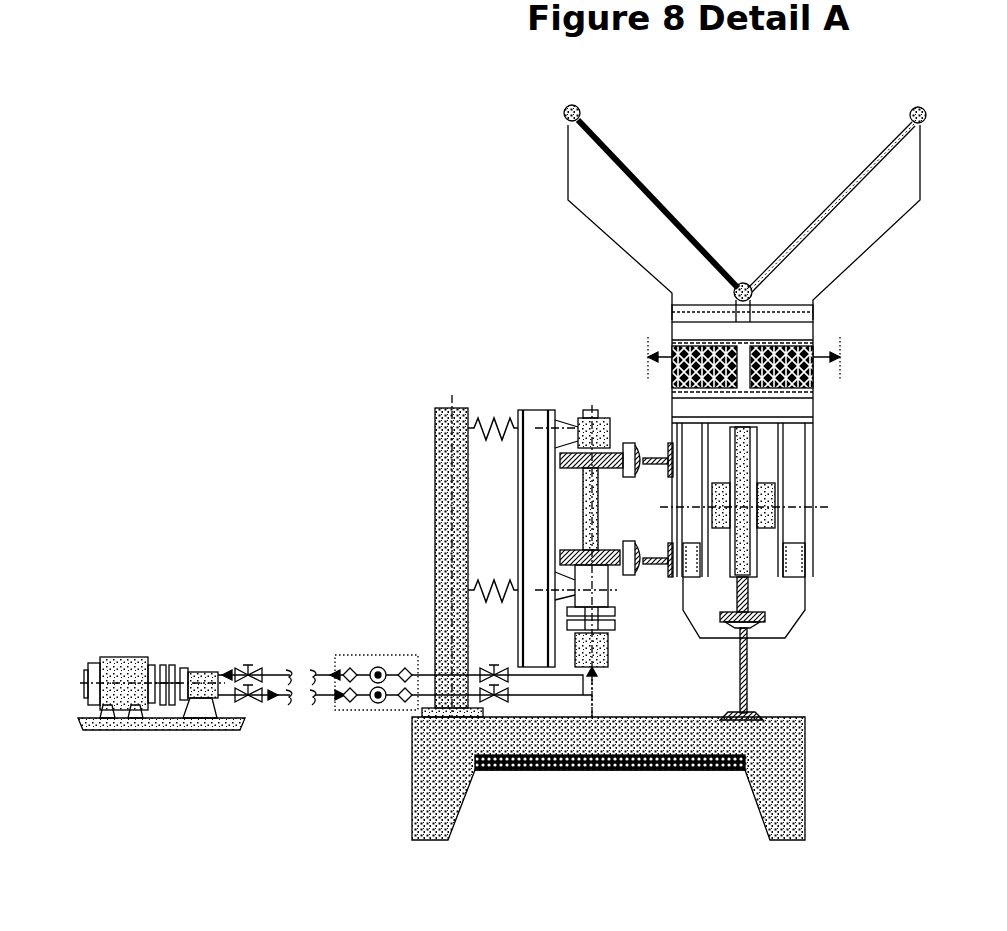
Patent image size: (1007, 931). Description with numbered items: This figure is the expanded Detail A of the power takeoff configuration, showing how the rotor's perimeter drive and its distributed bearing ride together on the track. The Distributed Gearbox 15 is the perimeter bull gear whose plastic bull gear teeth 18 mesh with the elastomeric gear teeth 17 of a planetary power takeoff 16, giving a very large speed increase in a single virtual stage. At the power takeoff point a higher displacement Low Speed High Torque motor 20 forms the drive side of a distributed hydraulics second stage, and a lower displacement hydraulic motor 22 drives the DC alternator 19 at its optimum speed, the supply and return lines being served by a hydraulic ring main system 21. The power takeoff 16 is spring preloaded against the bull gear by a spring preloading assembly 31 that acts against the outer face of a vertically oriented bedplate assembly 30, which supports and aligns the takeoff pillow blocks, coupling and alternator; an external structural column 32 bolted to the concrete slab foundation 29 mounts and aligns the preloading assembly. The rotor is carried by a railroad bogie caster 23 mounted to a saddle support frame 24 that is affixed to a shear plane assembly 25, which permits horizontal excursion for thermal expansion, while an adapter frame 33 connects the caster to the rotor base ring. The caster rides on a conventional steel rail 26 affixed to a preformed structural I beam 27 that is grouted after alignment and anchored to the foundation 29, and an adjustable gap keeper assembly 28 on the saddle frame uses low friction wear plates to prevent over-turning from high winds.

The Distributed Gearbox 15 is at (653, 455).
The power takeoff 16 is at (592, 557).
The elastomeric gear teeth 17 is at (593, 462).
The bull gear teeth 18 is at (628, 440).
The DC alternator 19 is at (120, 684).
The Low Speed High Torque motor 20 is at (606, 652).
The hydraulic ring main system 21 is at (378, 653).
The hydraulic motor 22 is at (200, 686).
The bogie caster 23 is at (740, 542).
The saddle support frame 24 is at (795, 443).
The shear plane assembly 25 is at (787, 348).
The steel rail 26 is at (735, 595).
The structural I beam 27 is at (747, 655).
The adjustable gap keeper assembly 28 is at (795, 555).
The concrete slab foundation 29 is at (410, 745).
The bedplate assembly 30 is at (535, 540).
The spring preloading assembly 31 is at (497, 575).
The structural column 32 is at (452, 635).
The adapter frame 33 is at (568, 150).